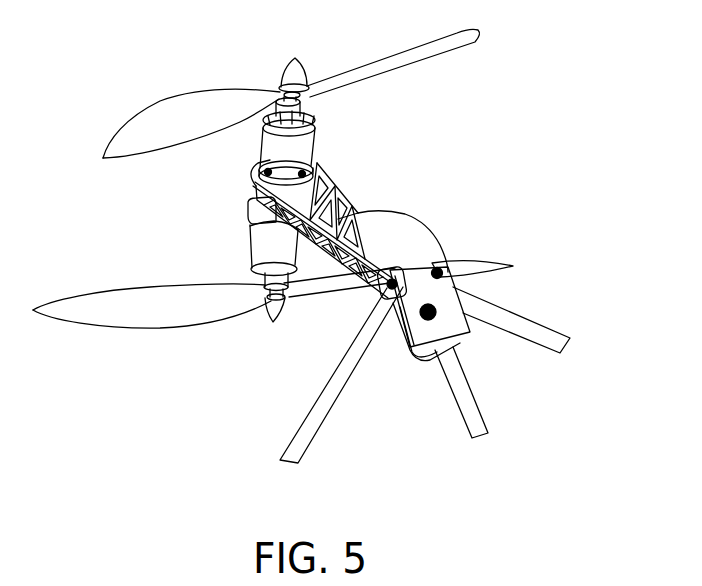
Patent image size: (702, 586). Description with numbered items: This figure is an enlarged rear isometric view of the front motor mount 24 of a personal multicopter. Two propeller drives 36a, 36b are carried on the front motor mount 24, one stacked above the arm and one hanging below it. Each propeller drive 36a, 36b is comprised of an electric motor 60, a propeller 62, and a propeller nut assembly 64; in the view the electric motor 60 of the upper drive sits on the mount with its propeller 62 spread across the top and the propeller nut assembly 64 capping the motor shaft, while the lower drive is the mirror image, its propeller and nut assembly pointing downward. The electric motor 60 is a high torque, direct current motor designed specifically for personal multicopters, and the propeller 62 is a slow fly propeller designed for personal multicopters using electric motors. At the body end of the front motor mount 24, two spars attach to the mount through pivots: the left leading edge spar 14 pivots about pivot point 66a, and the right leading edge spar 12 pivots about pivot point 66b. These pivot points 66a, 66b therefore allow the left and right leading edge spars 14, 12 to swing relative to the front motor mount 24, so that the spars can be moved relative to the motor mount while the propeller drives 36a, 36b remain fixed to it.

The right leading edge spar 12 is at (527, 315).
The left leading edge spar 14 is at (327, 373).
The front motor mount 24 is at (383, 210).
The propeller drive 36a is at (322, 145).
The propeller drive 36b is at (245, 248).
The electric motor 60 is at (258, 140).
The propeller 62 is at (207, 110).
The propeller nut assembly 64 is at (304, 65).
The pivot point 66a is at (366, 290).
The pivot point 66b is at (445, 260).